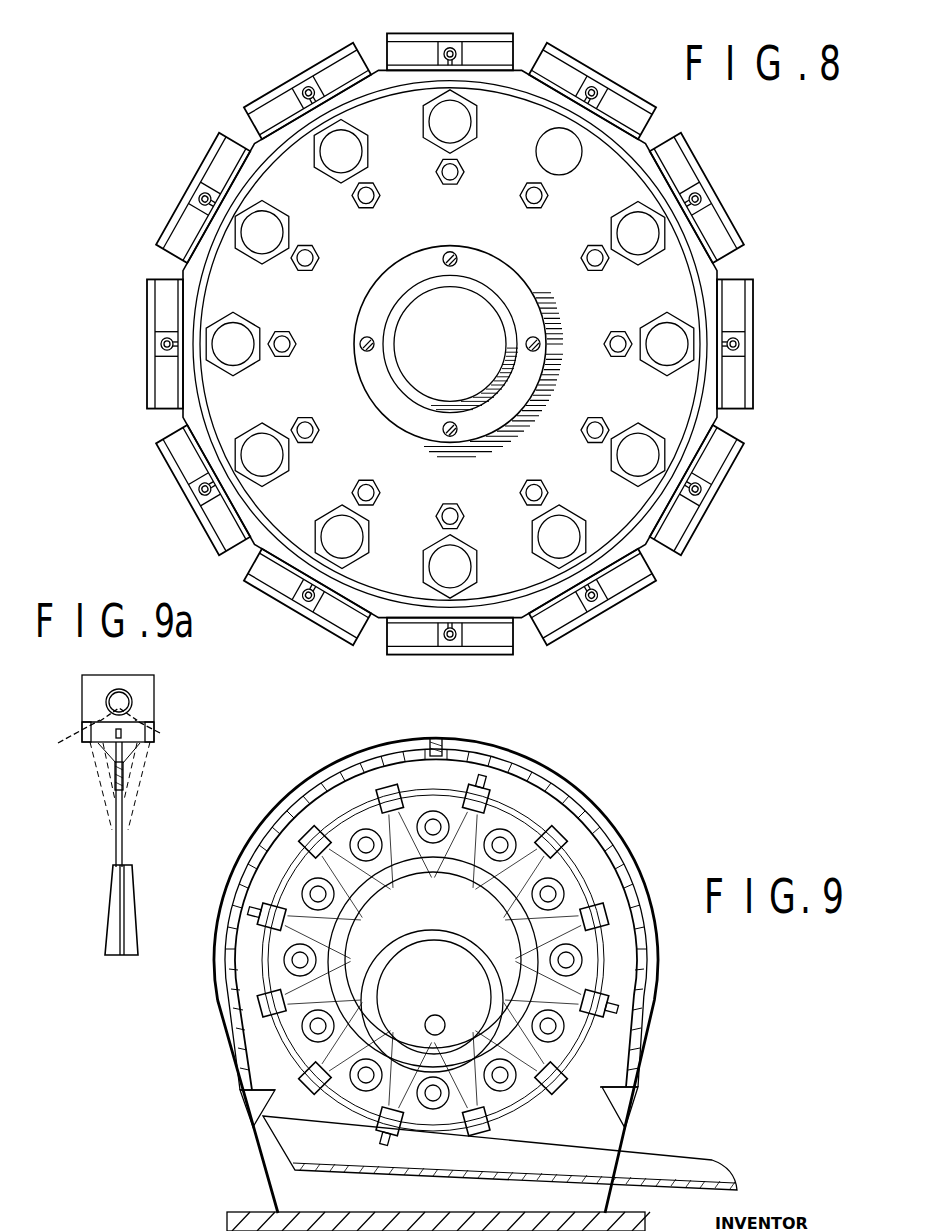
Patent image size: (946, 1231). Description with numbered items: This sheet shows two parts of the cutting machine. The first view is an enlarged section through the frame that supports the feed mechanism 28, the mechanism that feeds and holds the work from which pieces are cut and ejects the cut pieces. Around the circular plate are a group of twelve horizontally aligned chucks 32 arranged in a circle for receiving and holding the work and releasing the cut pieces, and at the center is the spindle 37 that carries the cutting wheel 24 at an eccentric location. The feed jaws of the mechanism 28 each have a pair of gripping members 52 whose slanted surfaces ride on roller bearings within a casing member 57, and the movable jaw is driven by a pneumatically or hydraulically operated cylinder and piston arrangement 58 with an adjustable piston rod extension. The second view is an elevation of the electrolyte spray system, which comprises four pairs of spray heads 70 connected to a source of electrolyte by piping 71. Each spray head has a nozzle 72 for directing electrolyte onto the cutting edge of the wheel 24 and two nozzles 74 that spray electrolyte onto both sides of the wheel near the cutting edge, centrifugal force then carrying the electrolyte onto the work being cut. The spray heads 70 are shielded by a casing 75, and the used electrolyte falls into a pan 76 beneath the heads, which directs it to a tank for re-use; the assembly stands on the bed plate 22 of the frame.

In FIG. 9, the bed plate 22 is at (272, 1223).
In FIG. 9, the cutting wheel 24 is at (404, 926).
In FIG. 9A, the cutting wheel 24 is at (104, 896).
In FIG. 8, the feed mechanism 28 is at (280, 73).
In FIG. 9, the chucks 32 is at (559, 887).
In FIG. 9, the spindle 37 is at (432, 1015).
In FIG. 8, the gripping members 52 is at (310, 90).
In FIG. 8, the casing member 57 is at (363, 62).
In FIG. 8, the cylinder and piston arrangement 58 is at (253, 263).
In FIG. 9, the spray heads 70 is at (382, 788).
In FIG. 9A, the spray heads 70 is at (82, 690).
In FIG. 9, the piping 71 is at (488, 782).
In FIG. 9A, the nozzle 72 is at (121, 732).
In FIG. 9A, the nozzles 74 is at (114, 742).
In FIG. 9, the casing 75 is at (262, 822).
In FIG. 9, the pan 76 is at (632, 1167).